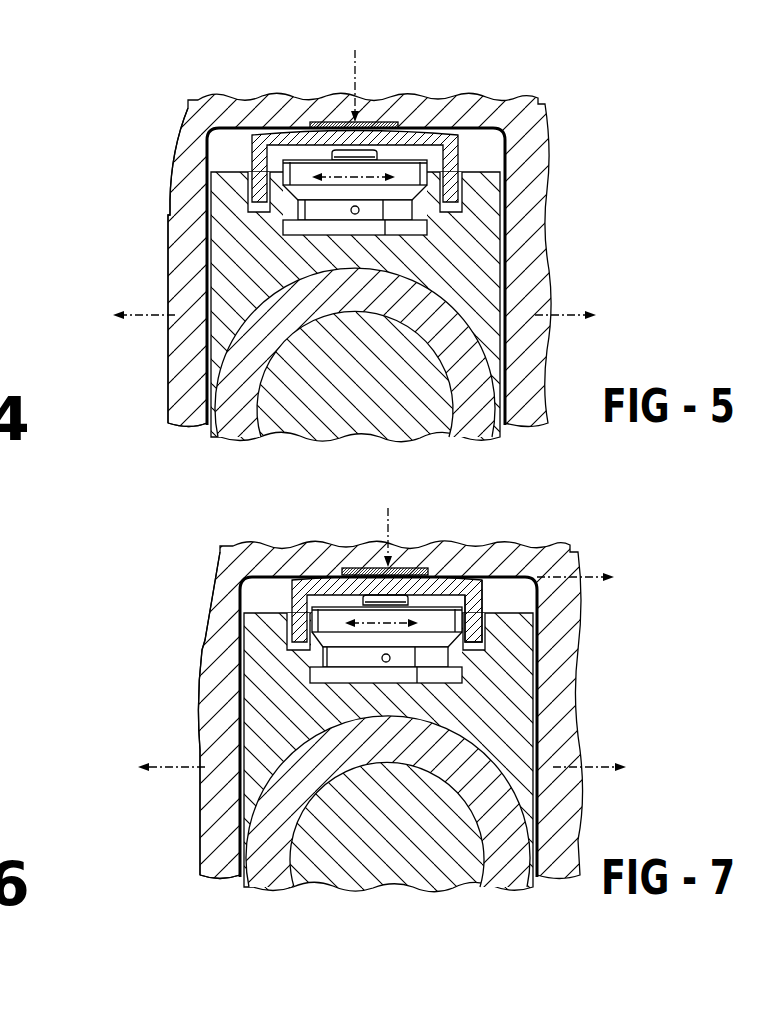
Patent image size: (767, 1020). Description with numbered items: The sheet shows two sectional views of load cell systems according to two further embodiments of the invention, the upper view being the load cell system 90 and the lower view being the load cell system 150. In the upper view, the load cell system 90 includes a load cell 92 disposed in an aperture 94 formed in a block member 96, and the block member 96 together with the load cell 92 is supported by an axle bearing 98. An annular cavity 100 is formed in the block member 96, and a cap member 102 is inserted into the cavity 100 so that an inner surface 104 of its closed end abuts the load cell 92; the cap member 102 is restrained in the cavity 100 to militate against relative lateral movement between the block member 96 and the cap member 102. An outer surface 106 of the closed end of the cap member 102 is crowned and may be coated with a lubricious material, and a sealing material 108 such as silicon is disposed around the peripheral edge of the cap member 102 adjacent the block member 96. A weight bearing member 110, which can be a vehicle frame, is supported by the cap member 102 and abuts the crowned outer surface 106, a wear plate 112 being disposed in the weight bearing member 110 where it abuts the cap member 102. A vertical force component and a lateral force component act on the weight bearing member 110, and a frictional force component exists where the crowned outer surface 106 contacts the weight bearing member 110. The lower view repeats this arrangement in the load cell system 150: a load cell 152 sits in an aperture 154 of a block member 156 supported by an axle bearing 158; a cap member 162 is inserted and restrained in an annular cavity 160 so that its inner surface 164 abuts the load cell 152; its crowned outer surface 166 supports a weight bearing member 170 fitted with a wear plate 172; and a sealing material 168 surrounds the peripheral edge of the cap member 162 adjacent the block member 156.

In FIG. 5, the load cell system 90 is at (172, 104).
In FIG. 5, the load cell 92 is at (307, 211).
In FIG. 5, the aperture 94 is at (433, 170).
In FIG. 5, the block member 96 is at (222, 193).
In FIG. 5, the axle bearing 98 is at (176, 402).
In FIG. 5, the annular cavity 100 is at (445, 192).
In FIG. 5, the cap member 102 is at (248, 163).
In FIG. 5, the inner surface 104 is at (395, 150).
In FIG. 5, the outer surface 106 is at (260, 132).
In FIG. 5, the sealing material 108 is at (462, 168).
In FIG. 5, the weight bearing member 110 is at (192, 137).
In FIG. 5, the wear plate 112 is at (392, 120).
In FIG. 7, the load cell system 150 is at (80, 665).
In FIG. 7, the load cell 152 is at (310, 660).
In FIG. 7, the aperture 154 is at (458, 688).
In FIG. 7, the block member 156 is at (255, 637).
In FIG. 7, the axle bearing 158 is at (233, 822).
In FIG. 7, the annular cavity 160 is at (484, 646).
In FIG. 7, the cap member 162 is at (278, 588).
In FIG. 7, the inner surface 164 is at (503, 578).
In FIG. 7, the outer surface 166 is at (290, 578).
In FIG. 7, the sealing material 168 is at (482, 605).
In FIG. 7, the weight bearing member 170 is at (236, 563).
In FIG. 7, the wear plate 172 is at (425, 568).